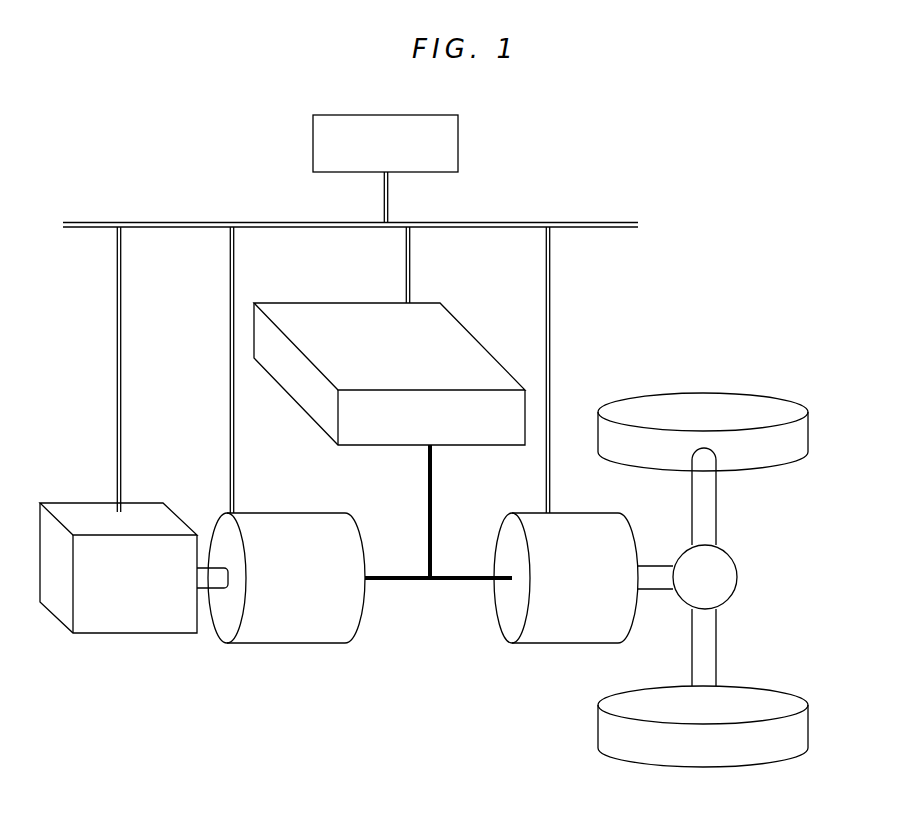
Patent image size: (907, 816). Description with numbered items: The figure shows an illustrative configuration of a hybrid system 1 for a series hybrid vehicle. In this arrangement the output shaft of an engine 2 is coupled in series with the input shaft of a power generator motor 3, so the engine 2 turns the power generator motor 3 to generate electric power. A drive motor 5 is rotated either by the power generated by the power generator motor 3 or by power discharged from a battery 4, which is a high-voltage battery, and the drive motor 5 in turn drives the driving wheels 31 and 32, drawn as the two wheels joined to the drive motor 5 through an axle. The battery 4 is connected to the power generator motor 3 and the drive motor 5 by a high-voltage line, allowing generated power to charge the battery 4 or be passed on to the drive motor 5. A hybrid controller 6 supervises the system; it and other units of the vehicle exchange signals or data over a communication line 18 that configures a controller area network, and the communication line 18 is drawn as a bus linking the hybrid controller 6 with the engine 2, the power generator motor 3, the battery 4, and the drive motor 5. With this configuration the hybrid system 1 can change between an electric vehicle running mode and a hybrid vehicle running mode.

The hybrid system 1 is at (672, 121).
The engine 2 is at (60, 597).
The power generator motor 3 is at (225, 613).
The battery 4 is at (486, 364).
The drive motor 5 is at (503, 607).
The hybrid controller 6 is at (460, 144).
The communication line 18 is at (208, 225).
The driving wheel 31 is at (810, 431).
The driving wheel 32 is at (810, 717).